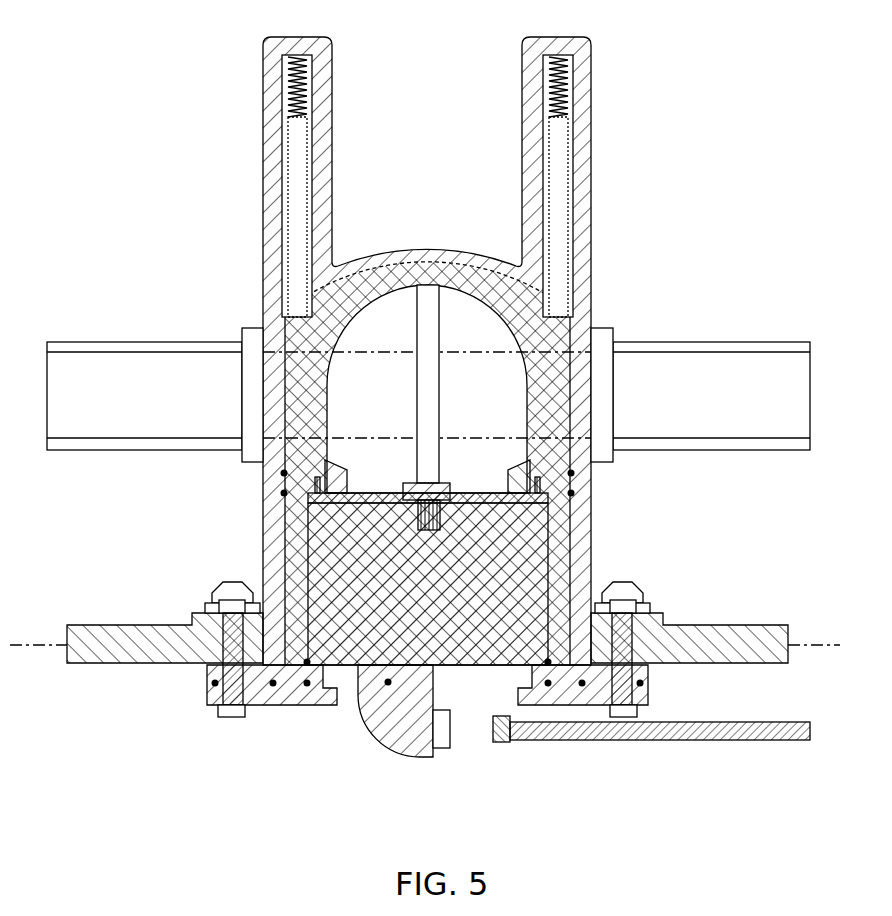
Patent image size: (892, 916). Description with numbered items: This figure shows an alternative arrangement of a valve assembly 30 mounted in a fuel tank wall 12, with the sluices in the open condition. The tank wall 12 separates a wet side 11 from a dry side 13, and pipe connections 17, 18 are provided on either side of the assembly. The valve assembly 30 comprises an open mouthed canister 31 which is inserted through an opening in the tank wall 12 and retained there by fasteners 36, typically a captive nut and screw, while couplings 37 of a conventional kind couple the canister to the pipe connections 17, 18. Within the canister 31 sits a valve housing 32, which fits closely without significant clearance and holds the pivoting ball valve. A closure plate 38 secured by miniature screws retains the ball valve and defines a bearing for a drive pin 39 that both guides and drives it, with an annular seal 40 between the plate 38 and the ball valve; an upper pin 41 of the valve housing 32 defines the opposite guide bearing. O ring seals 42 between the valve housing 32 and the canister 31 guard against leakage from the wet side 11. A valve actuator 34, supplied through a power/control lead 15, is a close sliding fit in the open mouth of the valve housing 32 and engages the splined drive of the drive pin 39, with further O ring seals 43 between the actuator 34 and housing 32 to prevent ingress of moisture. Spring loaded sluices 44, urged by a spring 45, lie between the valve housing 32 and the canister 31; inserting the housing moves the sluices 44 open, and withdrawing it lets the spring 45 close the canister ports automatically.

The valve assembly 30 is at (80, 542).
The wet side 11 is at (755, 562).
The fuel tank wall 12 is at (103, 665).
The dry side 13 is at (260, 789).
The power/control lead 15 is at (703, 741).
The pipe connection 17 is at (135, 382).
The pipe connection 18 is at (727, 382).
The canister 31 is at (583, 527).
The valve housing 32 is at (290, 535).
The valve actuator 34 is at (384, 686).
The fasteners 36 is at (230, 608).
The couplings 37 is at (240, 325).
The closure plate 38 is at (375, 494).
The drive pin 39 is at (460, 495).
The annular seal 40 is at (281, 473).
The upper pin 41 is at (428, 293).
The 'O' ring seals 42 is at (575, 493).
The 'O' ring seals 43 is at (300, 683).
The spring loaded sluices 44 is at (292, 195).
The spring 45 is at (292, 70).